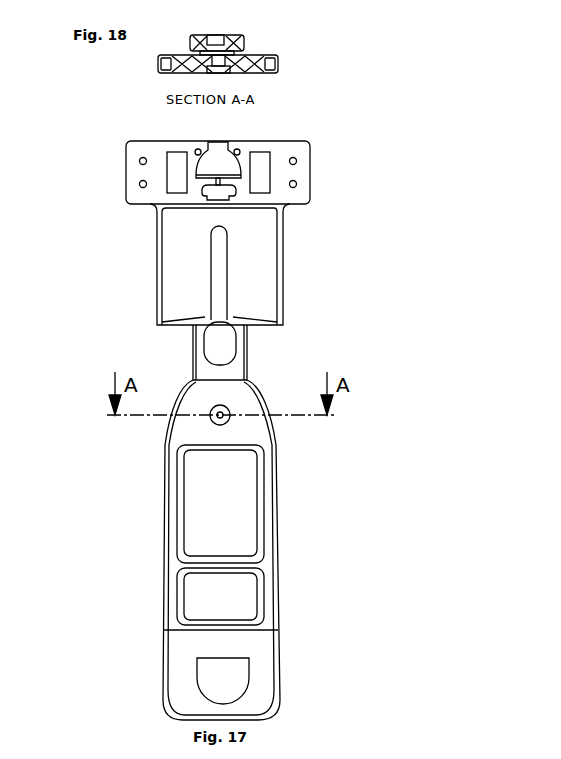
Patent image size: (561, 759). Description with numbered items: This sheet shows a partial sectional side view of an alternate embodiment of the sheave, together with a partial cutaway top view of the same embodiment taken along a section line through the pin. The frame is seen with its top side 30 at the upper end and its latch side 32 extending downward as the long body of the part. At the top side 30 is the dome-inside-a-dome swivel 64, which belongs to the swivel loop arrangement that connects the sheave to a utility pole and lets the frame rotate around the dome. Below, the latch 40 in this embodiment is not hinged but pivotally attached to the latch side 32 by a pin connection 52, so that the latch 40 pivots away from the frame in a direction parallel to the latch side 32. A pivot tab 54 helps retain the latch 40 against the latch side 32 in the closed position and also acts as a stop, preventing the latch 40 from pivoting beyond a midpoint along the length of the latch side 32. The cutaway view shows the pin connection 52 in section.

In FIG. 17, the top side 30 is at (310, 195).
In FIG. 17, the latch side 32 is at (273, 643).
In FIG. 17, the latch 40 is at (232, 360).
In FIG. 18, the pin connection 52 is at (232, 46).
In FIG. 17, the pin connection 52 is at (230, 422).
In FIG. 17, the pivot tab 54 is at (220, 333).
In FIG. 17, the dome-inside-a-dome swivel 64 is at (225, 167).